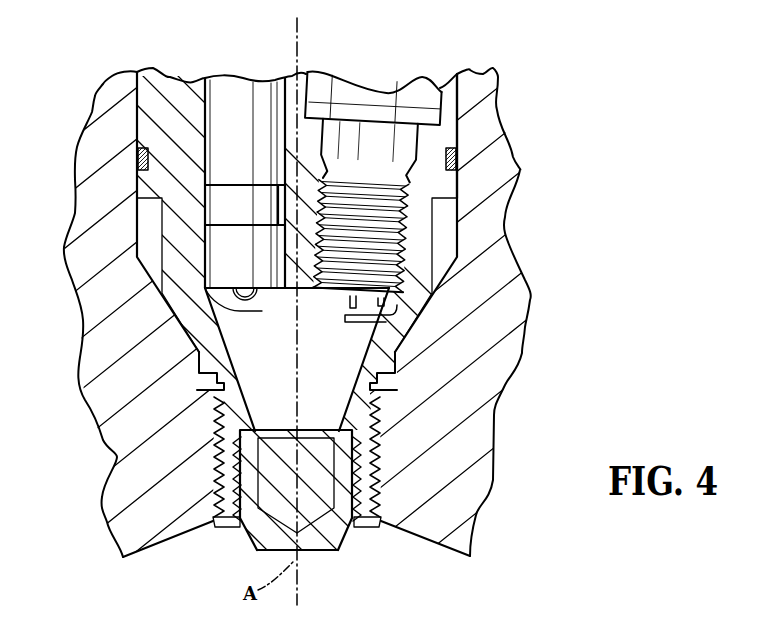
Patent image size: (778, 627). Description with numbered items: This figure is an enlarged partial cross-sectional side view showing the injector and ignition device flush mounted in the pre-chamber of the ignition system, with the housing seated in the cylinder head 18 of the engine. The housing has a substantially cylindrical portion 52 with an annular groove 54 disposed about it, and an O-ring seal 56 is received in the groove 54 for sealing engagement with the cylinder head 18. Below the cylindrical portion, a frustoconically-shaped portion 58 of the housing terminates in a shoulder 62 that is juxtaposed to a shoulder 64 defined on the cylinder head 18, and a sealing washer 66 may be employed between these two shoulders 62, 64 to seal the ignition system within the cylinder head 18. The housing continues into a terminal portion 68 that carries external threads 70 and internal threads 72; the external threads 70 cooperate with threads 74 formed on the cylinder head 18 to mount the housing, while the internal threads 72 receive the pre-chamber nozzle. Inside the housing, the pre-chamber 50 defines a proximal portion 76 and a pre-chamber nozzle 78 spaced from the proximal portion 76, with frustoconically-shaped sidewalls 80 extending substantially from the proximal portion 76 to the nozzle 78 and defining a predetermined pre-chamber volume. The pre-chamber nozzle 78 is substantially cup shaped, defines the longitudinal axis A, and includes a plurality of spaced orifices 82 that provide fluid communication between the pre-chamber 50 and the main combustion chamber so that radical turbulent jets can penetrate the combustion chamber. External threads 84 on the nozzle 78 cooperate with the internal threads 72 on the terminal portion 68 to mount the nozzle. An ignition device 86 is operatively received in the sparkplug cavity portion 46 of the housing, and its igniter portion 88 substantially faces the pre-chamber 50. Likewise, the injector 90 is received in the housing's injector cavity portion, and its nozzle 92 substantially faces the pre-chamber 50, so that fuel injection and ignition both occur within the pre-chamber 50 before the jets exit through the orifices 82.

The cylinder head 18 is at (480, 493).
The sparkplug cavity portion 46 is at (415, 74).
The pre-chamber 50 is at (353, 357).
The cylindrical portion 52 is at (470, 110).
The annular groove 54 is at (147, 157).
The O-ring seal 56 is at (457, 160).
The frustoconically-shaped portion 58 is at (178, 318).
The shoulder 62 is at (197, 383).
The shoulder 64 is at (397, 390).
The sealing washer 66 is at (197, 387).
The terminal portion 68 is at (160, 456).
The external threads 70 is at (217, 470).
The internal threads 72 is at (215, 525).
The threads 74 is at (377, 463).
The proximal portion 76 is at (305, 290).
The pre-chamber nozzle 78 is at (336, 556).
The frustoconically-shaped sidewalls 80 is at (246, 400).
The orifices 82 is at (243, 540).
The external threads 84 is at (350, 478).
The ignition device 86 is at (387, 75).
The igniter portion 88 is at (397, 315).
The injector 90 is at (244, 70).
The nozzle 92 is at (205, 305).